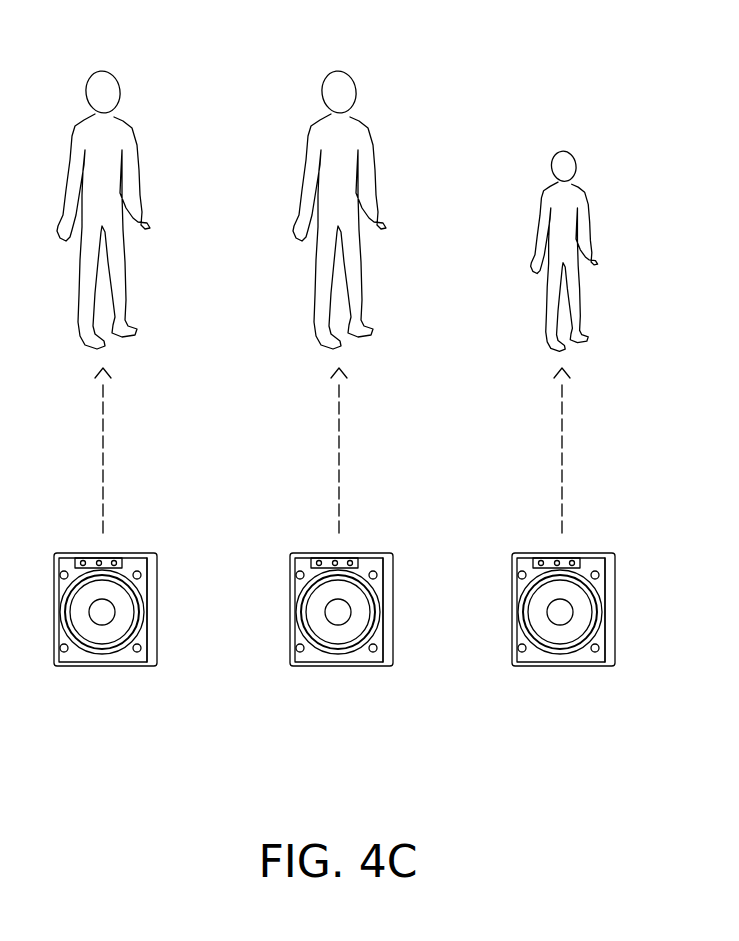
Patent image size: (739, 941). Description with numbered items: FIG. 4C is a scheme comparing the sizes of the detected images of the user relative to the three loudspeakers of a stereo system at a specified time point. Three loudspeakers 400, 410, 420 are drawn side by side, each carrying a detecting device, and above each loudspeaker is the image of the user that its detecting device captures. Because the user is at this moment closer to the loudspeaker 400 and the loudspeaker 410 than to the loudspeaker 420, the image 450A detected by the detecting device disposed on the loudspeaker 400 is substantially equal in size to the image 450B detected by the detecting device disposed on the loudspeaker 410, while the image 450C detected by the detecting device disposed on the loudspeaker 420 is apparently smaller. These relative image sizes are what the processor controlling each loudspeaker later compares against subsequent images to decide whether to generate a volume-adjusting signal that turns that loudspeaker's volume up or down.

The image 450A is at (103, 181).
The image 450B is at (339, 181).
The image 450C is at (565, 182).
The loudspeaker 400 is at (103, 666).
The loudspeaker 410 is at (339, 666).
The loudspeaker 420 is at (561, 666).